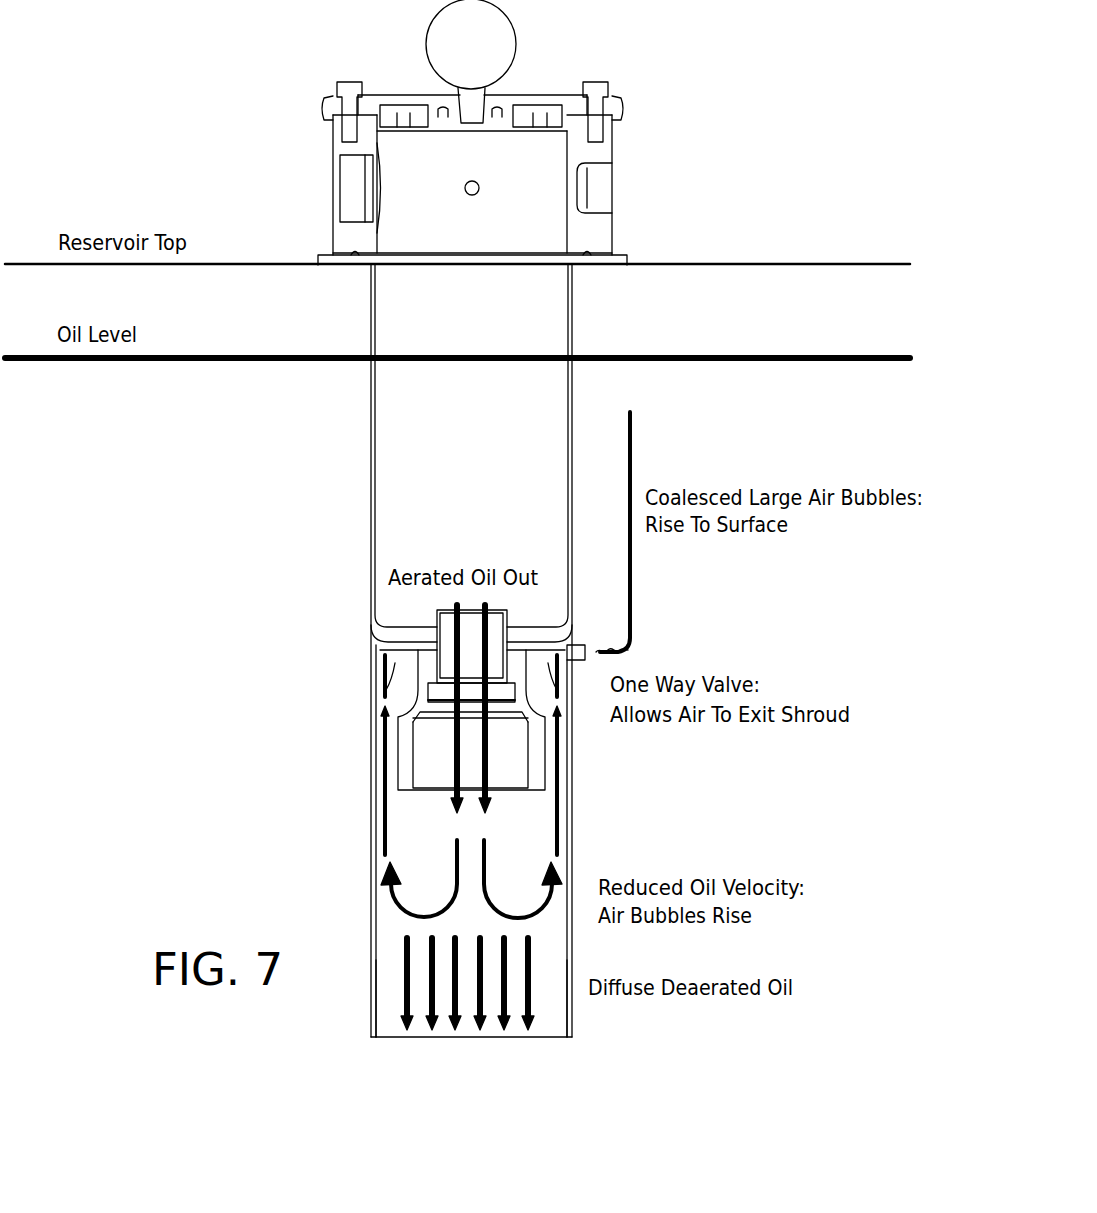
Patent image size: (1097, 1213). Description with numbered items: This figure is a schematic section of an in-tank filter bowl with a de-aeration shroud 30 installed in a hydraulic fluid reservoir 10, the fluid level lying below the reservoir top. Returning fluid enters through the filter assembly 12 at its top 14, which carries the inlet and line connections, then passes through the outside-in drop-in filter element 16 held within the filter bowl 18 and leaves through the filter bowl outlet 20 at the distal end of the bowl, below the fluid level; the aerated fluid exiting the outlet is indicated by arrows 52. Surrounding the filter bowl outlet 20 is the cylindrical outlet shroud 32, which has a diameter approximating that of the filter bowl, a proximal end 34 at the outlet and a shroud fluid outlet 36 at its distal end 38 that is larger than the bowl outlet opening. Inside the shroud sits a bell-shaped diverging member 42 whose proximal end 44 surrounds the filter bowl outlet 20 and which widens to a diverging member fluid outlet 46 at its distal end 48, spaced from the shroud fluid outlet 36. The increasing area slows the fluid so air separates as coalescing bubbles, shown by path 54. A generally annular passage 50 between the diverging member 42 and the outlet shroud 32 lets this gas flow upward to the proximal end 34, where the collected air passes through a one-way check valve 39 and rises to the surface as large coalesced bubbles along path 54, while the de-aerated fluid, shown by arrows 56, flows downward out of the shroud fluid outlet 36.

The reservoir 10 is at (832, 264).
The filter assembly 12 is at (712, 90).
The top 14 is at (444, 187).
The filter element 16 is at (506, 323).
The filter bowl 18 is at (575, 305).
The filter bowl outlet 20 is at (507, 618).
The in-tank filter bowl de-aeration shroud 30 is at (716, 771).
The cylindrical outlet shroud 32 is at (573, 826).
The proximal end 34 is at (372, 658).
The shroud fluid outlet 36 is at (547, 1038).
The distal end 38 is at (573, 1026).
The one-way check valve 39 is at (586, 642).
The diverging member 42 is at (548, 745).
The proximal end 44 is at (540, 688).
The diverging member fluid outlet 46 is at (435, 791).
The distal end 48 is at (396, 780).
The annular passage 50 is at (566, 775).
The arrows 52 is at (452, 617).
The path 54 is at (633, 592).
The deaerated oil flow 56 is at (535, 963).